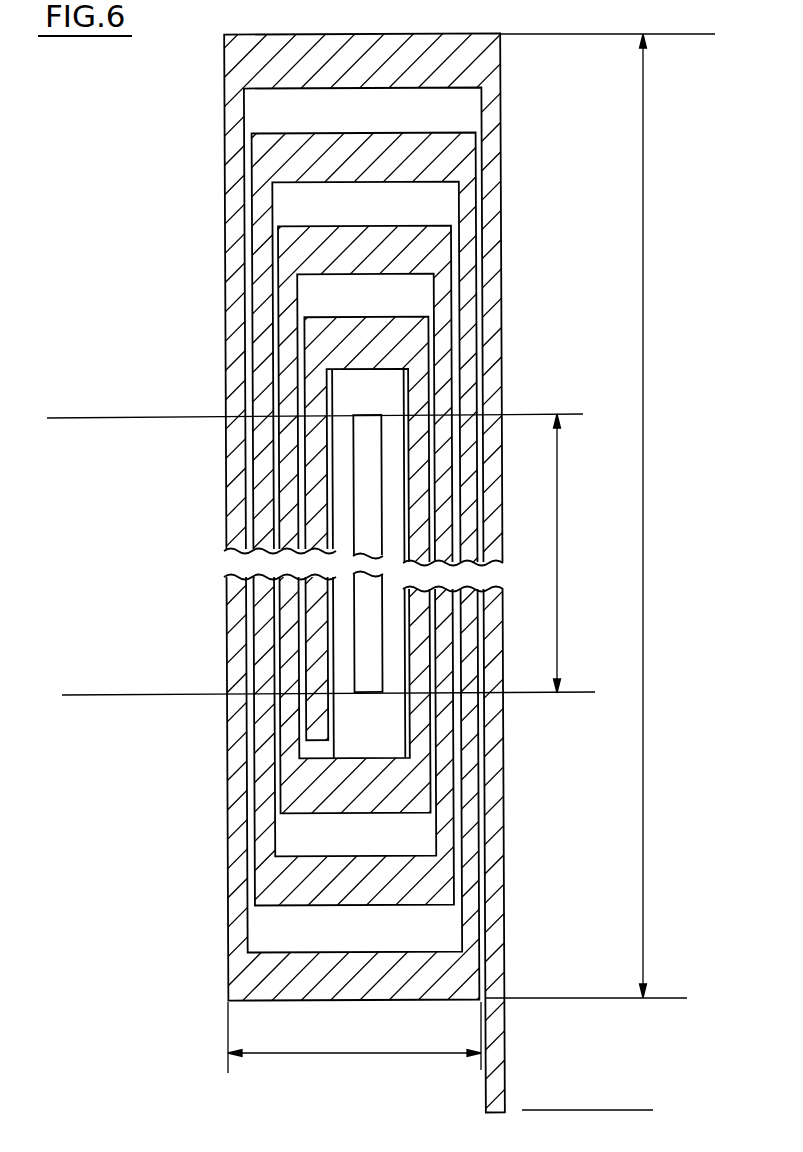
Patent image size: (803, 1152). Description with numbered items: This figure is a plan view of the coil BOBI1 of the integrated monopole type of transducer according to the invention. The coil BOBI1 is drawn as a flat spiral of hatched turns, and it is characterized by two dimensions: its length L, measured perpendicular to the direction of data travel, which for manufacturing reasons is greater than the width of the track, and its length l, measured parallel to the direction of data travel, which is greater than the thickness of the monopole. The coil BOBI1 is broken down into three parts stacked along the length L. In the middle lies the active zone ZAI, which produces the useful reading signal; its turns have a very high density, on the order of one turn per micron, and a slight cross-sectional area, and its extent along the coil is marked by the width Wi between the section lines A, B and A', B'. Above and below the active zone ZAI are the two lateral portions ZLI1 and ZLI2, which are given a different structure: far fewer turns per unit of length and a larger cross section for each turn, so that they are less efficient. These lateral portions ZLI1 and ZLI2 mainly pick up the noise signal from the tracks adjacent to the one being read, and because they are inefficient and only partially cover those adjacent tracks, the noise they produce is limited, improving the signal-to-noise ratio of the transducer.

The coil BOBI1 is at (502, 203).
The lateral portion ZLI1 is at (82, 220).
The active zone ZAI is at (84, 553).
The lateral portion ZLI2 is at (89, 865).
The section line end A is at (315, 403).
The section line end B is at (519, 400).
The section line end A' is at (328, 681).
The section line end B' is at (522, 676).
The active zone width Wi is at (570, 553).
The length of the coil L is at (600, 572).
The length of the coil l is at (354, 1037).